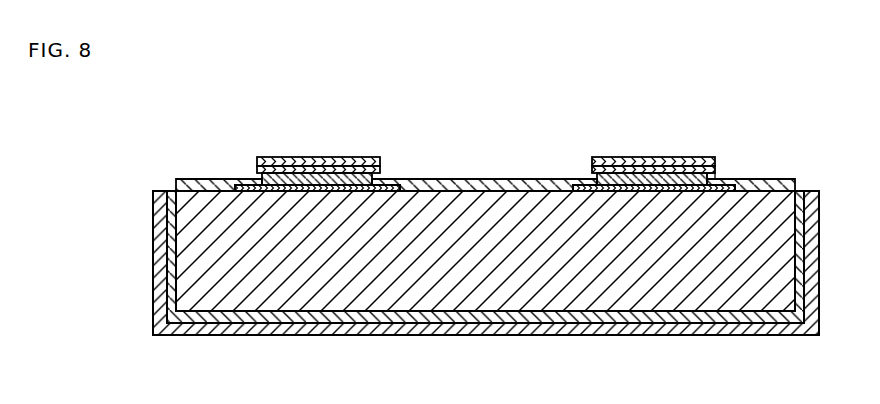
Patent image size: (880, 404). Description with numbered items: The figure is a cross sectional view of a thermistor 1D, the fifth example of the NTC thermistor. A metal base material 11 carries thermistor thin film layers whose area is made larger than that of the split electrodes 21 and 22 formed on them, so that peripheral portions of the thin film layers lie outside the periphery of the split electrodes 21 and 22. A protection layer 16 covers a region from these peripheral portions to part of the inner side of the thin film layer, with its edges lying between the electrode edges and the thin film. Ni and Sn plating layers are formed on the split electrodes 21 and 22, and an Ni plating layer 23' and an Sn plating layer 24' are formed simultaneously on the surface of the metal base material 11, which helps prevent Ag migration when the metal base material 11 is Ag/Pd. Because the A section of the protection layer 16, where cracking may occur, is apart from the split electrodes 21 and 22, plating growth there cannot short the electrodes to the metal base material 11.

The thermistor 1D is at (249, 112).
The metal base material 11 is at (577, 297).
The protection layer 16 is at (458, 179).
The split electrode 21 is at (285, 188).
The split electrode 22 is at (620, 189).
The Ni plating layer 23' is at (485, 286).
The Sn plating layer 24' is at (486, 286).
The A section A is at (715, 176).